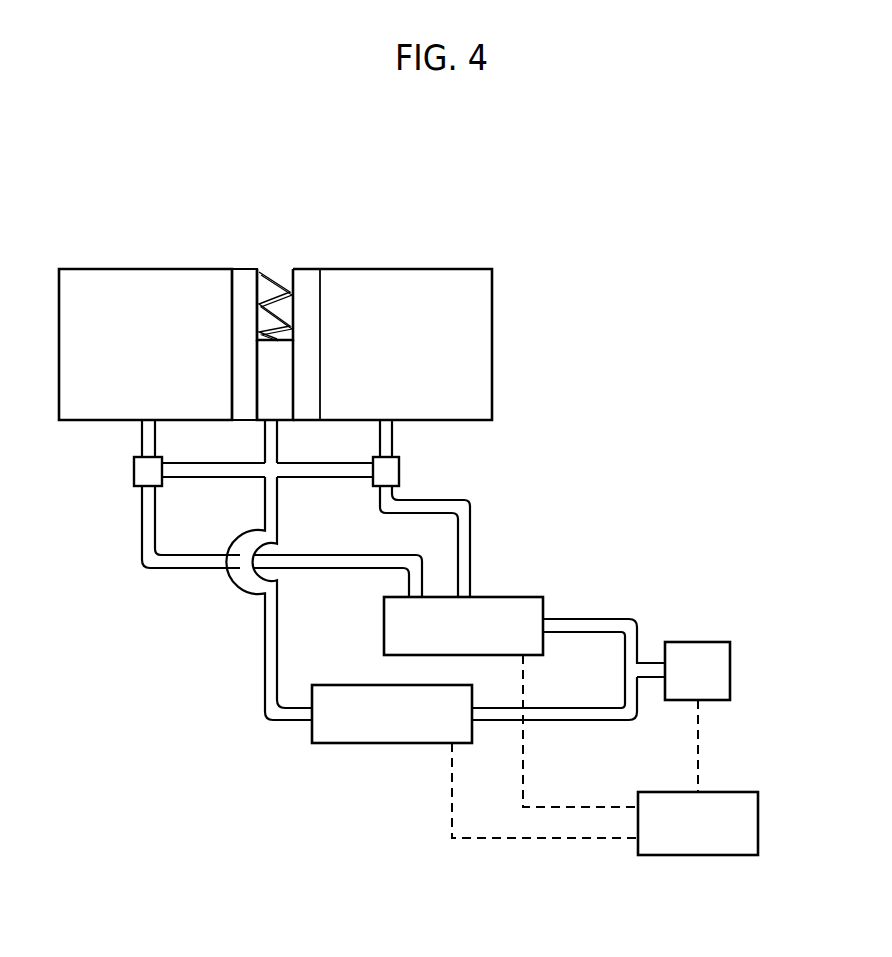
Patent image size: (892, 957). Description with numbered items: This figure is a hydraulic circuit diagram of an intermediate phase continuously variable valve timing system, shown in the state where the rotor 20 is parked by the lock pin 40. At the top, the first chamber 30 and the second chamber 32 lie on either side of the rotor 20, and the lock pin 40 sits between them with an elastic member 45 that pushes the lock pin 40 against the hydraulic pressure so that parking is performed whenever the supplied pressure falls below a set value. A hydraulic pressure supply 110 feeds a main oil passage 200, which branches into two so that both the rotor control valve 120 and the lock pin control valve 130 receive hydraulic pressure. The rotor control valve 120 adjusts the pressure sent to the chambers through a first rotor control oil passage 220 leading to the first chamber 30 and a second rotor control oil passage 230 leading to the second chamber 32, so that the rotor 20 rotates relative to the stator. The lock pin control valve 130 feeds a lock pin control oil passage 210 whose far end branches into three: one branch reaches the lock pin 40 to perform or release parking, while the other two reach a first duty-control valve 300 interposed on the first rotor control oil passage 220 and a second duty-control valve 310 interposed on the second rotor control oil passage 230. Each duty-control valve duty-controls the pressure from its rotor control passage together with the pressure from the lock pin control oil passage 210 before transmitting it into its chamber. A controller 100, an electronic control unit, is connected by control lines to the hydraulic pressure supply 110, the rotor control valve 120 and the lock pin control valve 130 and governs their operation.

The first chamber 30 is at (147, 327).
The second chamber 32 is at (400, 322).
The rotor 20 is at (245, 290).
The lock pin 40 is at (283, 368).
The elastic member 45 is at (277, 268).
The first duty-control valve 300 is at (140, 470).
The second duty-control valve 310 is at (399, 470).
The first rotor control oil passage 220 is at (168, 562).
The lock pin control oil passage 210 is at (270, 683).
The second rotor control oil passage 230 is at (467, 543).
The rotor control valve 120 is at (528, 608).
The lock pin control valve 130 is at (393, 737).
The hydraulic pressure supply 110 is at (697, 642).
The main oil passage 200 is at (613, 625).
The controller 100 is at (697, 855).